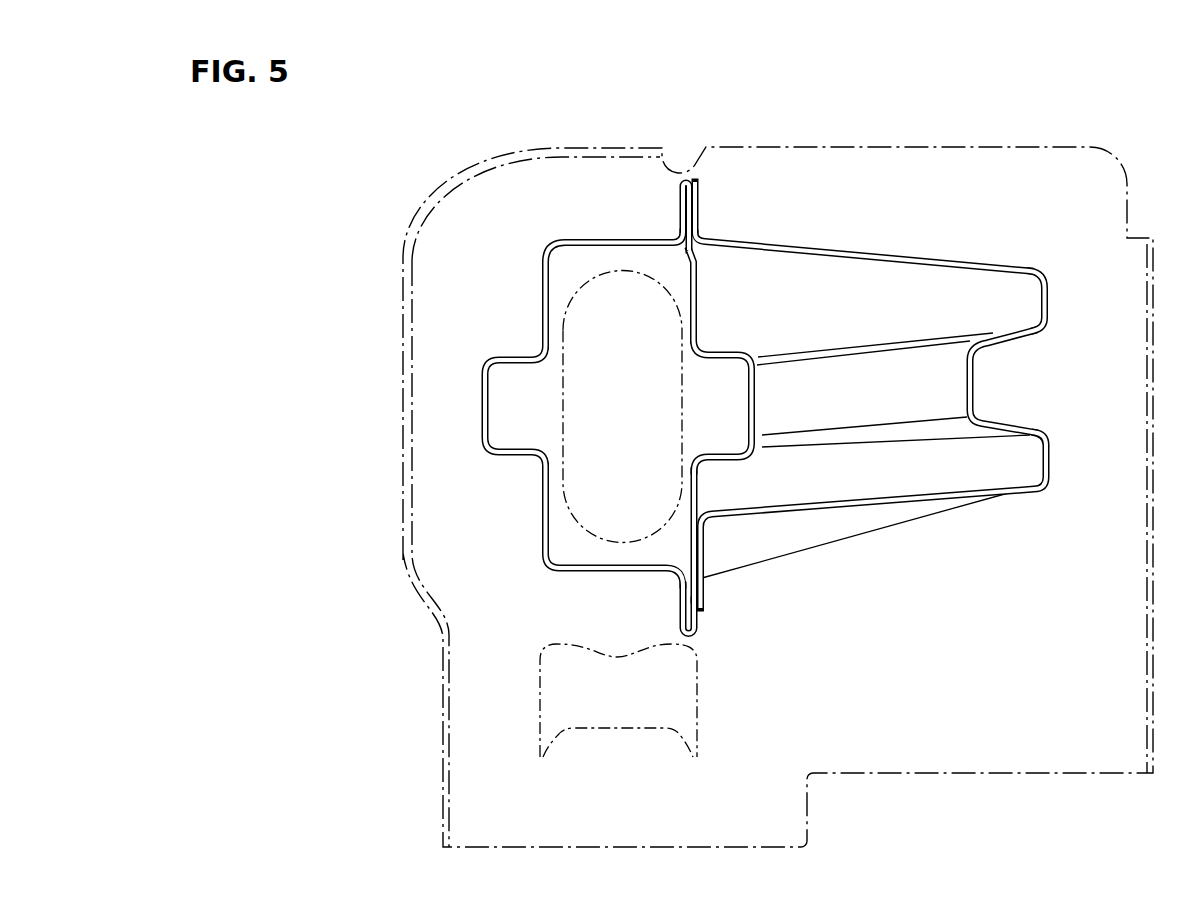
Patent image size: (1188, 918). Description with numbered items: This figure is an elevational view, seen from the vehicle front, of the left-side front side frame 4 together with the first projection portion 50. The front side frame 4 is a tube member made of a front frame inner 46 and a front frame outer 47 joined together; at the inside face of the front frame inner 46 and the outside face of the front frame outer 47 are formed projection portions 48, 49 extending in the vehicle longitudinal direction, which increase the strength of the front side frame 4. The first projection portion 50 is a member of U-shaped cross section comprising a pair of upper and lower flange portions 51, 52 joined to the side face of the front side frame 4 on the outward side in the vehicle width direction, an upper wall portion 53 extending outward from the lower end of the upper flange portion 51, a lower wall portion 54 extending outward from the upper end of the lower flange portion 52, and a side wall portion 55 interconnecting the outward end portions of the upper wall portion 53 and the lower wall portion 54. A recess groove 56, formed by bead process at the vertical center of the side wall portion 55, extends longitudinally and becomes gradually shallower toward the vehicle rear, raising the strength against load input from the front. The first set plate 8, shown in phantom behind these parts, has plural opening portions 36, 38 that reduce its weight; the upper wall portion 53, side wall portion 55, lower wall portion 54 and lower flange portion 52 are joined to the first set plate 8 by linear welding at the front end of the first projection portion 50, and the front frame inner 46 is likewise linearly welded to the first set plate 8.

The front side frame 4 is at (546, 106).
The first set plate 8 is at (1127, 152).
The opening portion 36 is at (580, 522).
The opening portion 38 is at (545, 700).
The front frame inner 46 is at (571, 228).
The front frame outer 47 is at (678, 268).
The projection portion 48 is at (482, 397).
The projection portion 49 is at (758, 396).
The first projection portion 50 is at (907, 386).
The upper flange portion 51 is at (700, 199).
The lower flange portion 52 is at (702, 563).
The upper wall portion 53 is at (893, 252).
The lower wall portion 54 is at (890, 505).
The side wall portion 55 is at (1060, 302).
The recess groove 56 is at (1003, 422).